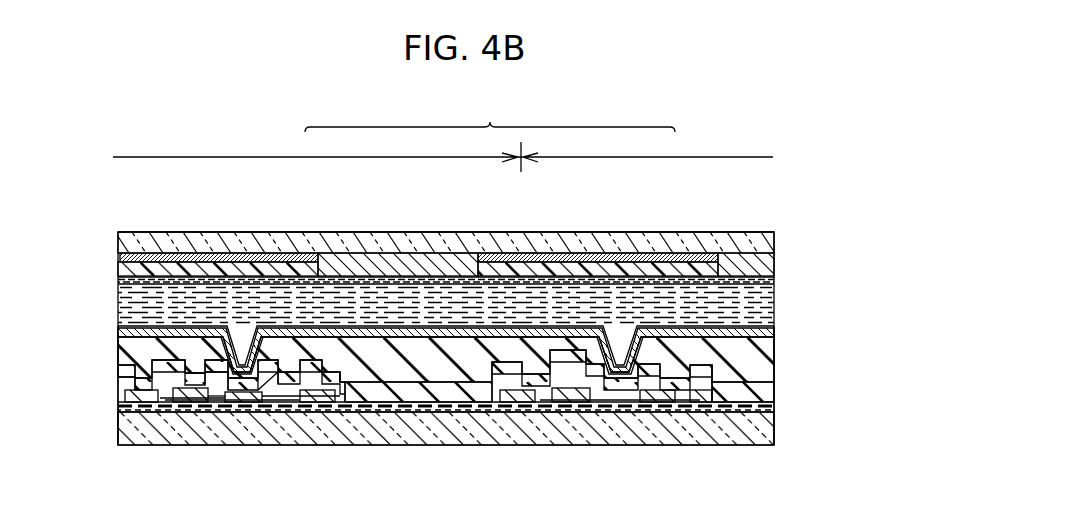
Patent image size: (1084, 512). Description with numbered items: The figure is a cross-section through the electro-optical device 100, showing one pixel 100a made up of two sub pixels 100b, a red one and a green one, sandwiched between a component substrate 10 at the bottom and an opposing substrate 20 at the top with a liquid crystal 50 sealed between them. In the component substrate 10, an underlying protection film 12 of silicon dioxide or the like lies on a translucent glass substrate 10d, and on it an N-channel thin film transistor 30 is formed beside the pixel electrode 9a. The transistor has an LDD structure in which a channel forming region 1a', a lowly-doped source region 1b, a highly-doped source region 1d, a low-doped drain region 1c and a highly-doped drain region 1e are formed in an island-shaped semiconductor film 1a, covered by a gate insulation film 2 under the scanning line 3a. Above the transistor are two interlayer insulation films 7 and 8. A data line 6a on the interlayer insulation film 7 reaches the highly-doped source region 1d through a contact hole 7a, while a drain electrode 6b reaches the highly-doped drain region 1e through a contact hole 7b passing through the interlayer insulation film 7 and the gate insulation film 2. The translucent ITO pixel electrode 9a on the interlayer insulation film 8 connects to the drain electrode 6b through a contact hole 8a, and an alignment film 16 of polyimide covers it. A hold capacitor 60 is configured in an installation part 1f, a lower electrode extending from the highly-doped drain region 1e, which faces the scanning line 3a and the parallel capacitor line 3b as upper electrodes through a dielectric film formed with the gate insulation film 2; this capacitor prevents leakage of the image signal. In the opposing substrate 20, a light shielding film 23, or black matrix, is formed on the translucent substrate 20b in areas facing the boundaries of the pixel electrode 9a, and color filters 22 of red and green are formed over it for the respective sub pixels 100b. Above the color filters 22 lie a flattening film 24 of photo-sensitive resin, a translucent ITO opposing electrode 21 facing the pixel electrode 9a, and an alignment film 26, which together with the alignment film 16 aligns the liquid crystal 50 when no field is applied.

The electro-optical device 100 is at (776, 126).
The pixel 100a is at (490, 116).
The sub pixel 100b is at (443, 153).
The thin film transistor 30 is at (152, 344).
The light shielding film 23 is at (202, 254).
The opposing substrate 20 is at (306, 240).
The translucent substrate 20b is at (775, 232).
The color filter 22 is at (395, 256).
The opposing electrode 21 is at (529, 262).
The alignment film 26 is at (632, 270).
The flattening film 24 is at (669, 262).
The liquid crystal 50 is at (775, 295).
The alignment film 16 is at (775, 322).
The pixel electrode 9a is at (775, 335).
The interlayer insulation film 8 is at (774, 357).
The contact hole 8a is at (240, 362).
The interlayer insulation film 7 is at (773, 398).
The contact hole 7a is at (122, 376).
The contact hole 7b is at (275, 380).
The underlying protection film 12 is at (773, 408).
The translucent substrate 10d is at (777, 412).
The component substrate 10 is at (833, 443).
The hold capacitor 60 is at (340, 368).
The scanning line 3a is at (202, 372).
The capacitor line 3b is at (333, 376).
The data line 6a is at (197, 352).
The drain electrode 6b is at (221, 365).
The semiconductor film 1a is at (232, 449).
The channel forming region 1a' is at (224, 447).
The lowly-doped source region 1b is at (182, 400).
The low-doped drain region 1c is at (240, 398).
The highly-doped source region 1d is at (160, 398).
The highly-doped drain region 1e is at (270, 397).
The installation part 1f is at (313, 399).
The gate insulation film 2 is at (385, 407).